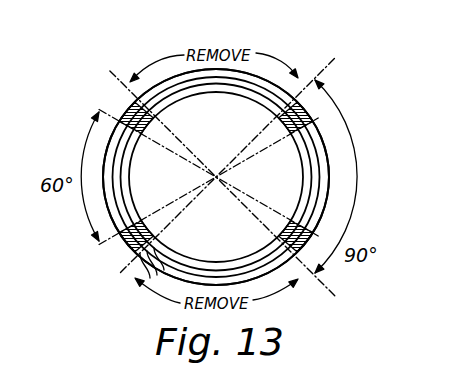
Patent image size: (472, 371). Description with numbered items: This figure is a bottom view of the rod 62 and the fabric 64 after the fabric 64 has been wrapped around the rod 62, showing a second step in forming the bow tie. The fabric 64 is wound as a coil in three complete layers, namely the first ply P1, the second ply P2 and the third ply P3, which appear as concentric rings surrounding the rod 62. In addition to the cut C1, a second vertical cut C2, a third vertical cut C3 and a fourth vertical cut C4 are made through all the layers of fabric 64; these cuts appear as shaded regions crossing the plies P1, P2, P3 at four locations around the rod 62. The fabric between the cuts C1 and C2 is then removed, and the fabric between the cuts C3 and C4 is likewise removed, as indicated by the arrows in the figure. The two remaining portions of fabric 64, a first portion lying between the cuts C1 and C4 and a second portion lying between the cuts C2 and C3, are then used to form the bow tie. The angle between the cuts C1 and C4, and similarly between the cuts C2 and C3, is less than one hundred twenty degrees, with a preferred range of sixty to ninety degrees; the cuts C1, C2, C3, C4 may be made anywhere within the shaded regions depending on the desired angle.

The rod 62 is at (244, 110).
The fabric 64 is at (327, 140).
The first ply P1 is at (307, 150).
The second ply P2 is at (317, 163).
The third ply P3 is at (327, 186).
The cut C1 is at (298, 252).
The second vertical cut C2 is at (134, 256).
The third vertical cut C3 is at (133, 101).
The fourth vertical cut C4 is at (300, 104).